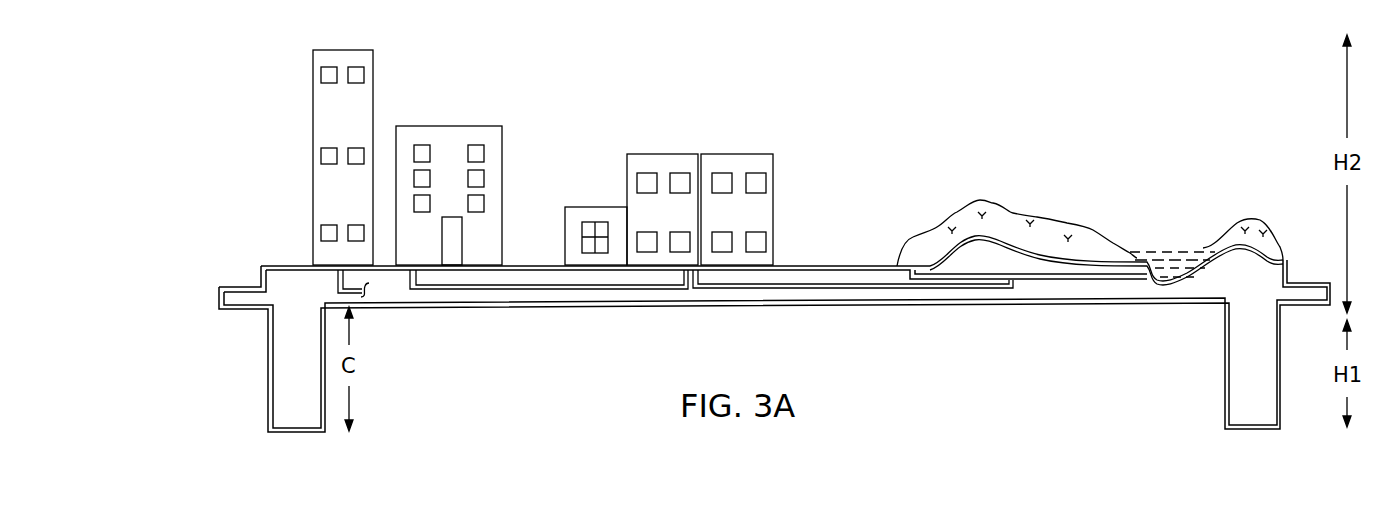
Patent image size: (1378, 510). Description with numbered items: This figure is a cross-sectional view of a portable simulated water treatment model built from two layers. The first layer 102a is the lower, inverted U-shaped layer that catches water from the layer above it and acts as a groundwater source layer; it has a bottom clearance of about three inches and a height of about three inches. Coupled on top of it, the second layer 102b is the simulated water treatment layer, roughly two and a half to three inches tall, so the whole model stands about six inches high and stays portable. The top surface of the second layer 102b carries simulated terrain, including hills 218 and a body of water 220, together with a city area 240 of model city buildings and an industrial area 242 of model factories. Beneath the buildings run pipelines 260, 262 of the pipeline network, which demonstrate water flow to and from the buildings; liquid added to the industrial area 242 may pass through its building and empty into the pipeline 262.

The first layer 102a is at (267, 382).
The second layer 102b is at (244, 278).
The hills 218 is at (1020, 213).
The body of water 220 is at (1153, 252).
The city area 240 is at (453, 77).
The industrial area 242 is at (748, 133).
The pipeline 260 is at (373, 289).
The pipeline 262 is at (810, 283).